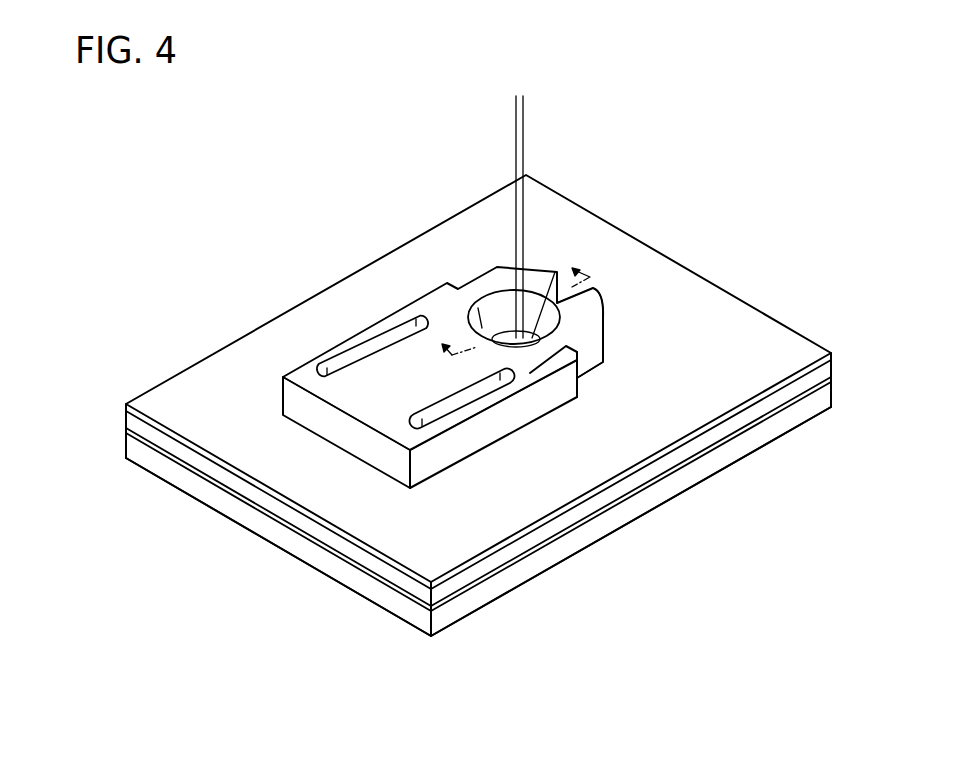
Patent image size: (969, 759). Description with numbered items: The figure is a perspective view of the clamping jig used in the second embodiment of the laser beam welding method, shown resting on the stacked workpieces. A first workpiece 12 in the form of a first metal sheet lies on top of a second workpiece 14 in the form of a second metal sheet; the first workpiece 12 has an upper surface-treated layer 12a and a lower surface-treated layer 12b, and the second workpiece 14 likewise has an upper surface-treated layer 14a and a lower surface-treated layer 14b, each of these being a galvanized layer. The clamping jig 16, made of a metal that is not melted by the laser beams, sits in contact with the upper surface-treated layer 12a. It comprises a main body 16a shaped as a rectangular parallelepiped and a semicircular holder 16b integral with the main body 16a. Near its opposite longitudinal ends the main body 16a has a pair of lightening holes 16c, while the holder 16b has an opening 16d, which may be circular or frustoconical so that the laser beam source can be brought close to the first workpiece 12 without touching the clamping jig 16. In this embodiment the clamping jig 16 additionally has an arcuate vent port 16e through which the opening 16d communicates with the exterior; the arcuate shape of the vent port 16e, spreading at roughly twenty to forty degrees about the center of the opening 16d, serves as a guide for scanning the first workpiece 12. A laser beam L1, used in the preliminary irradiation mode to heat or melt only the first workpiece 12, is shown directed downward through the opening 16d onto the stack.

The first workpiece 12 is at (434, 390).
The upper surface-treated layer 12a is at (125, 403).
The lower surface-treated layer 12b is at (125, 419).
The second workpiece 14 is at (463, 506).
The upper surface-treated layer 14a is at (140, 443).
The lower surface-treated layer 14b is at (161, 478).
The clamping jig 16 is at (446, 371).
The main body 16a is at (393, 368).
The holder 16b is at (591, 322).
The lightening holes 16c is at (398, 328).
The opening 16d is at (502, 313).
The vent port 16e is at (595, 288).
The laser beam L1 is at (523, 123).